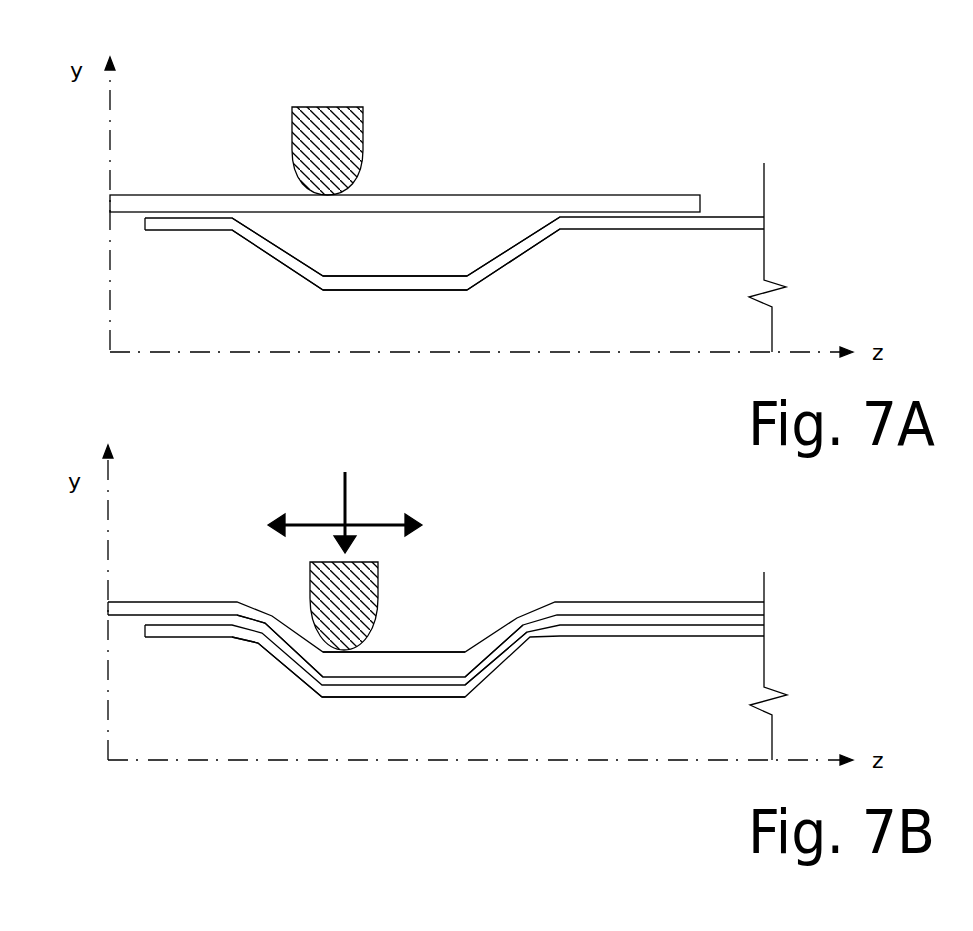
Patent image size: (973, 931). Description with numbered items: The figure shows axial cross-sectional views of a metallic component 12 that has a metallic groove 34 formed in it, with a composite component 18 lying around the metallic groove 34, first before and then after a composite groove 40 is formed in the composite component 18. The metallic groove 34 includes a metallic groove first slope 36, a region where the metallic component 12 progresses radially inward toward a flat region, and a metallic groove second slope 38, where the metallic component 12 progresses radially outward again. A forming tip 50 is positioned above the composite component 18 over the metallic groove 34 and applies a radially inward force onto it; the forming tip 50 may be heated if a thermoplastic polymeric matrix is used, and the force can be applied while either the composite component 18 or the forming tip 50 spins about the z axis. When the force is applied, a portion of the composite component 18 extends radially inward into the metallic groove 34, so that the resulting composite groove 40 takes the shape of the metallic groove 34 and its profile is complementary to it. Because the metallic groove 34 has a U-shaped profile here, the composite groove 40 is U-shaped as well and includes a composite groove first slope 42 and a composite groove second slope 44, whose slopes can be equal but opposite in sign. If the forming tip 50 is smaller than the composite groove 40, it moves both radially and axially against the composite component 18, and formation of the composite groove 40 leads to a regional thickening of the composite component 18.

In FIG. 7A, the metallic component 12 is at (660, 229).
In FIG. 7B, the metallic component 12 is at (685, 637).
In FIG. 7A, the composite component 18 is at (618, 195).
In FIG. 7B, the composite component 18 is at (682, 602).
In FIG. 7A, the metallic groove 34 is at (403, 291).
In FIG. 7B, the metallic groove 34 is at (412, 698).
In FIG. 7A, the metallic groove first slope 36 is at (513, 258).
In FIG. 7B, the metallic groove first slope 36 is at (505, 675).
In FIG. 7A, the metallic groove second slope 38 is at (270, 255).
In FIG. 7B, the metallic groove second slope 38 is at (312, 690).
In FIG. 7B, the composite groove 40 is at (413, 652).
In FIG. 7B, the composite groove first slope 42 is at (523, 635).
In FIG. 7B, the composite groove second slope 44 is at (262, 641).
In FIG. 7A, the forming tip 50 is at (356, 128).
In FIG. 7B, the forming tip 50 is at (318, 592).